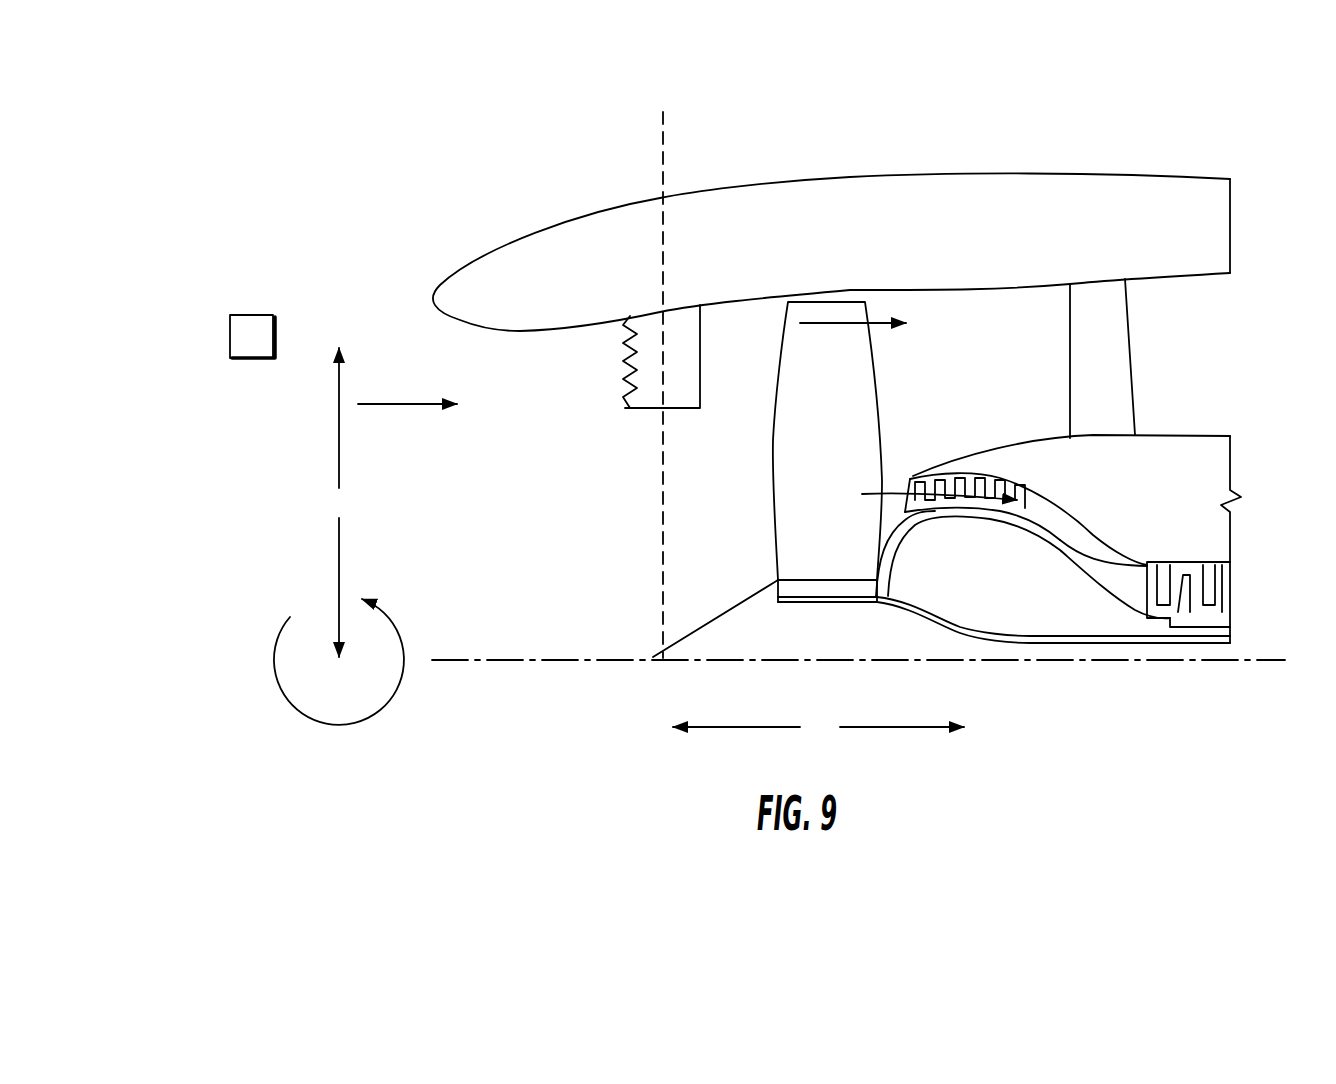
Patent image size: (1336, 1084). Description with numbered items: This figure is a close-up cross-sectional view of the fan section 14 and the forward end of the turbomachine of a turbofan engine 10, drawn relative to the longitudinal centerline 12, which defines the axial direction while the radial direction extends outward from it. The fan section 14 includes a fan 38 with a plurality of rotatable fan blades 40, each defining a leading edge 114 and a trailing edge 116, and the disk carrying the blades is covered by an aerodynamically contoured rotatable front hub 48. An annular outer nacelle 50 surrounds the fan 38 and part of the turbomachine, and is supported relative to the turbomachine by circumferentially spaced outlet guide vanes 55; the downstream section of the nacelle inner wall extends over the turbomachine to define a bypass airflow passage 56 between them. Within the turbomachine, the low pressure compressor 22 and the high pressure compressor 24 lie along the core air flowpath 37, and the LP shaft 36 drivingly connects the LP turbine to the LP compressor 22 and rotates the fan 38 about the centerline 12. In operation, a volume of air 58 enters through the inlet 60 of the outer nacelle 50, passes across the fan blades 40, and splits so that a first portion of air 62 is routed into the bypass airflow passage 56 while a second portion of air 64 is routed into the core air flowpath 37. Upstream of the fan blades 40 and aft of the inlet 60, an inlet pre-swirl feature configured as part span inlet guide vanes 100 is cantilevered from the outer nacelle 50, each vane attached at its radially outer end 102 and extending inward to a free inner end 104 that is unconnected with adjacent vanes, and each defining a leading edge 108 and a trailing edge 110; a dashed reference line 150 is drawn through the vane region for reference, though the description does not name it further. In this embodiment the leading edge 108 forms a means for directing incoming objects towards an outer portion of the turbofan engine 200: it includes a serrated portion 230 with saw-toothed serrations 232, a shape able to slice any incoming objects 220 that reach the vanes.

The turbofan engine 10 is at (1031, 140).
The longitudinal centerline 12 is at (515, 660).
The fan section 14 is at (690, 211).
The low pressure compressor 22 is at (1053, 481).
The high pressure compressor 24 is at (1183, 550).
The LP shaft 36 is at (1064, 644).
The core air flowpath 37 is at (1135, 575).
The fan 38 is at (824, 280).
The fan blades 40 is at (881, 433).
The hub 48 is at (672, 660).
The outer nacelle 50 is at (821, 180).
The outlet guide vanes 55 is at (1121, 377).
The bypass airflow passage 56 is at (1006, 412).
The volume of air 58 is at (420, 405).
The inlet 60 is at (421, 360).
The first portion of air 62 is at (843, 320).
The second portion of air 64 is at (862, 493).
The part span inlet guide vanes 100 is at (678, 388).
The outer end 102 is at (681, 302).
The inner end 104 is at (650, 410).
The leading edge 108 is at (607, 338).
The trailing edge 110 is at (715, 361).
The leading edge 114 is at (767, 432).
The trailing edge 116 is at (883, 387).
The reference plane 150 is at (661, 283).
The means for directing incoming objects towards an outer portion of the turbofan en 200 is at (601, 419).
The incoming objects 220 is at (228, 338).
The serrated portion 230 is at (619, 378).
The saw-toothed serrations 232 is at (619, 378).